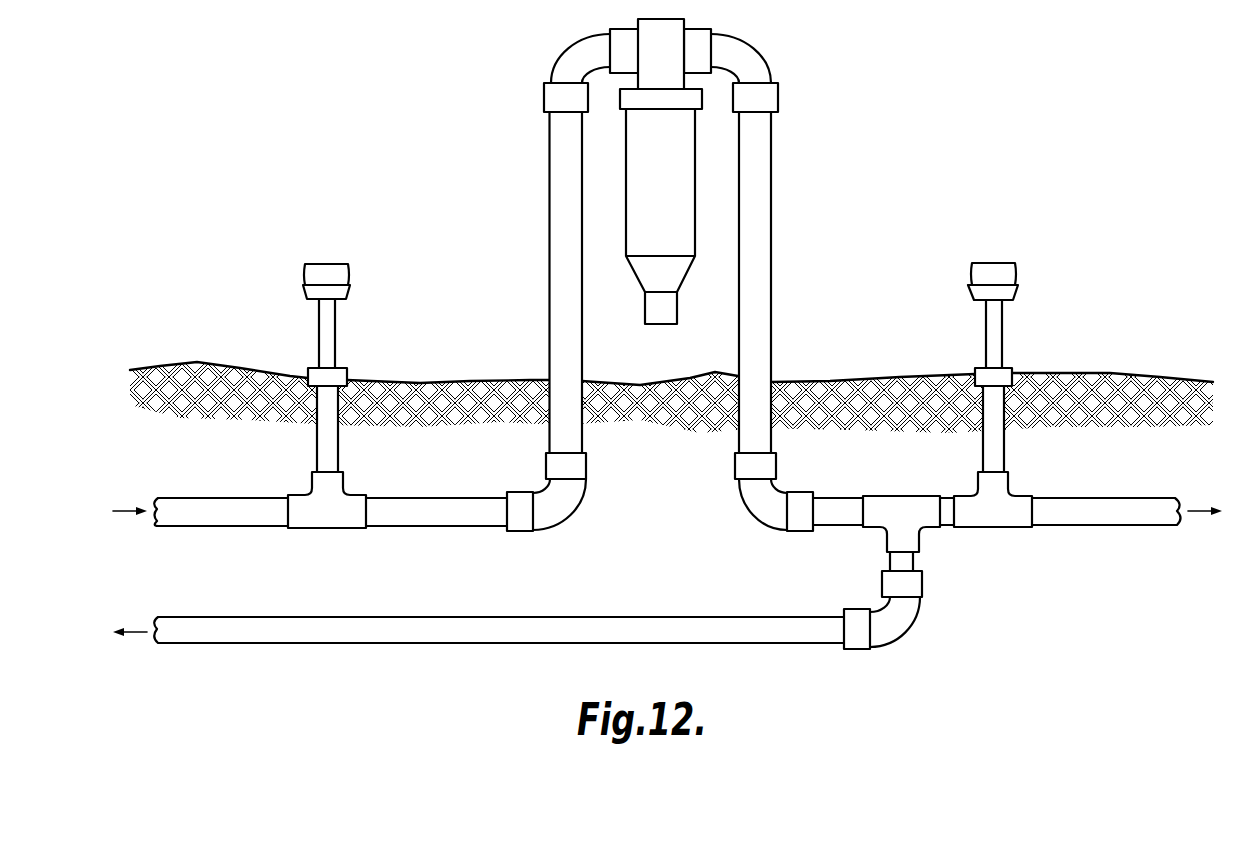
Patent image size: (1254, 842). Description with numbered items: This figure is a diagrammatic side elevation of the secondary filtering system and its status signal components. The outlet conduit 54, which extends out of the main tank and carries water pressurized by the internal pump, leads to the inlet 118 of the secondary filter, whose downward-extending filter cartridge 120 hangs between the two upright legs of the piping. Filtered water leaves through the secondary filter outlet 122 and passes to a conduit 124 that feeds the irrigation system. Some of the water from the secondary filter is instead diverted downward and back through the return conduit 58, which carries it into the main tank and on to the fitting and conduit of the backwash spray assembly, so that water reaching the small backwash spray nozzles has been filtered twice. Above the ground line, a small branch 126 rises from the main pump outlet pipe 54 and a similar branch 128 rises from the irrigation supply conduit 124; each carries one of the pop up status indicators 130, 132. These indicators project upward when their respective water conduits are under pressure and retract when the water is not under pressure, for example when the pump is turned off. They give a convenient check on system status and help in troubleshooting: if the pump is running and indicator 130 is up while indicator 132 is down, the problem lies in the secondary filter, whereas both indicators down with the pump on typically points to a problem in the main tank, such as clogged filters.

The outlet conduit 54 is at (222, 500).
The return conduit 58 is at (238, 637).
The inlet of the secondary filter 118 is at (568, 47).
The filter cartridge 120 is at (693, 218).
The secondary filter outlet 122 is at (757, 50).
The conduit 124 is at (1128, 500).
The small branch 126 is at (345, 495).
The branch 128 is at (1020, 500).
The pop up status indicator 130 is at (301, 273).
The pop up status indicator 132 is at (1024, 281).